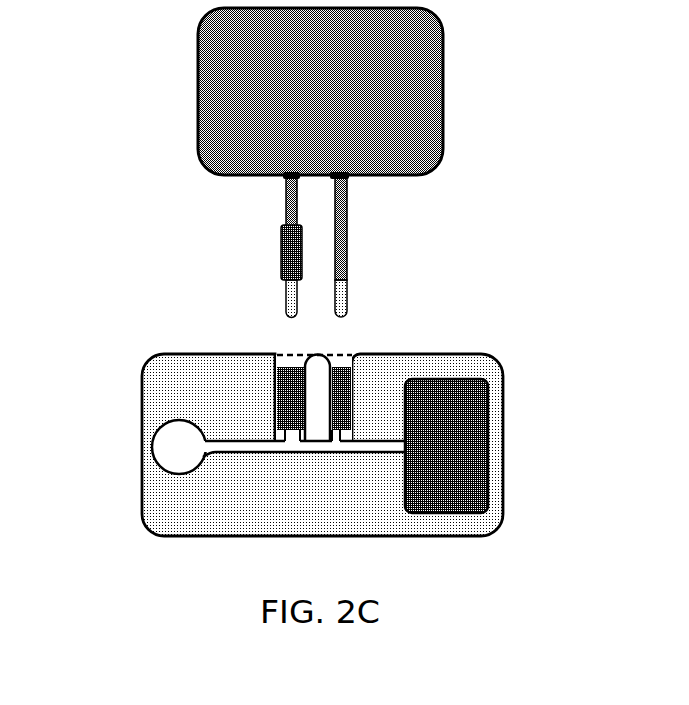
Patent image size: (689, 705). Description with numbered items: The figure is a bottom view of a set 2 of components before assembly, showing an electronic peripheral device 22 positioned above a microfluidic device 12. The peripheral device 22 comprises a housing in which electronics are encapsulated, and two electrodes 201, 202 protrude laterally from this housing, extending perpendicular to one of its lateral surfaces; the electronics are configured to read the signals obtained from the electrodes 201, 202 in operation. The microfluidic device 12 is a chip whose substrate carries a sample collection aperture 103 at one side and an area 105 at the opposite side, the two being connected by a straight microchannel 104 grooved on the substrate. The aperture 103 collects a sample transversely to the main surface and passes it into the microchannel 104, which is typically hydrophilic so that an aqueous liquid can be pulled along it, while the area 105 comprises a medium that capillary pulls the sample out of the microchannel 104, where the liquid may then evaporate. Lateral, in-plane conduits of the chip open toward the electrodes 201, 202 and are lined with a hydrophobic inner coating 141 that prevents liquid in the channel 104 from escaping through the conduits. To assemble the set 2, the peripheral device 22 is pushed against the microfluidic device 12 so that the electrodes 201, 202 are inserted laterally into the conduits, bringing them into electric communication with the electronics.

The set of components 2 is at (513, 202).
The microfluidic device 12 is at (490, 353).
The electronic peripheral device 22 is at (197, 80).
The sample collection aperture 103 is at (163, 433).
The microchannel 104 is at (260, 447).
The area 105 is at (492, 500).
The hydrophobic inner coating 141 is at (277, 397).
The electrode 201 is at (260, 245).
The electrode 202 is at (363, 245).